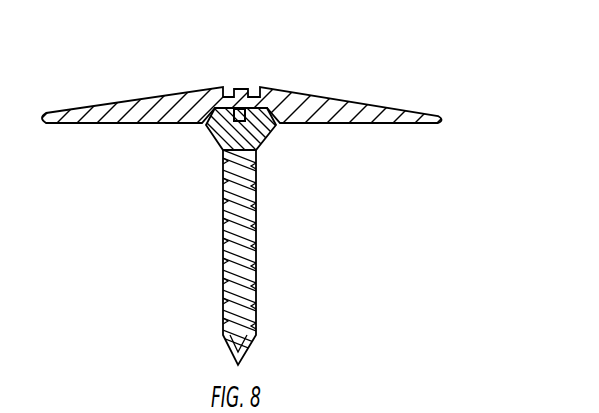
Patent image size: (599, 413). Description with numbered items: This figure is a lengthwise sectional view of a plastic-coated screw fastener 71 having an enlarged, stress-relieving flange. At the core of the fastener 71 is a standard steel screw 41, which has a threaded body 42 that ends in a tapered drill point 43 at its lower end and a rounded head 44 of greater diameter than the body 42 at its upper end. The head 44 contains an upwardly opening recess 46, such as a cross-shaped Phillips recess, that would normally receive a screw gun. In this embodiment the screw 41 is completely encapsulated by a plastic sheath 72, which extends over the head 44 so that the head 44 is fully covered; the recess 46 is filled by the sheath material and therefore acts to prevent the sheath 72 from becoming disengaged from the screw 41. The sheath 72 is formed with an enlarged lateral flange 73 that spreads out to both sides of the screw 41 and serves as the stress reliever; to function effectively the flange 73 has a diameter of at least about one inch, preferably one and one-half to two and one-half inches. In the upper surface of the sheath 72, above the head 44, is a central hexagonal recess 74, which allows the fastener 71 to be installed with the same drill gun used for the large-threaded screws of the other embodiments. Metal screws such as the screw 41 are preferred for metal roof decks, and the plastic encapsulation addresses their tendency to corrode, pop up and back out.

The fastener 71 is at (282, 179).
The plastic sheath 72 is at (194, 87).
The enlarged lateral flange 73 is at (63, 114).
The central hexagonal recess 74 is at (230, 85).
The recess 46 is at (242, 103).
The head 44 is at (250, 141).
The screw 41 is at (232, 147).
The threaded body 42 is at (226, 270).
The tapered drill point 43 is at (228, 325).